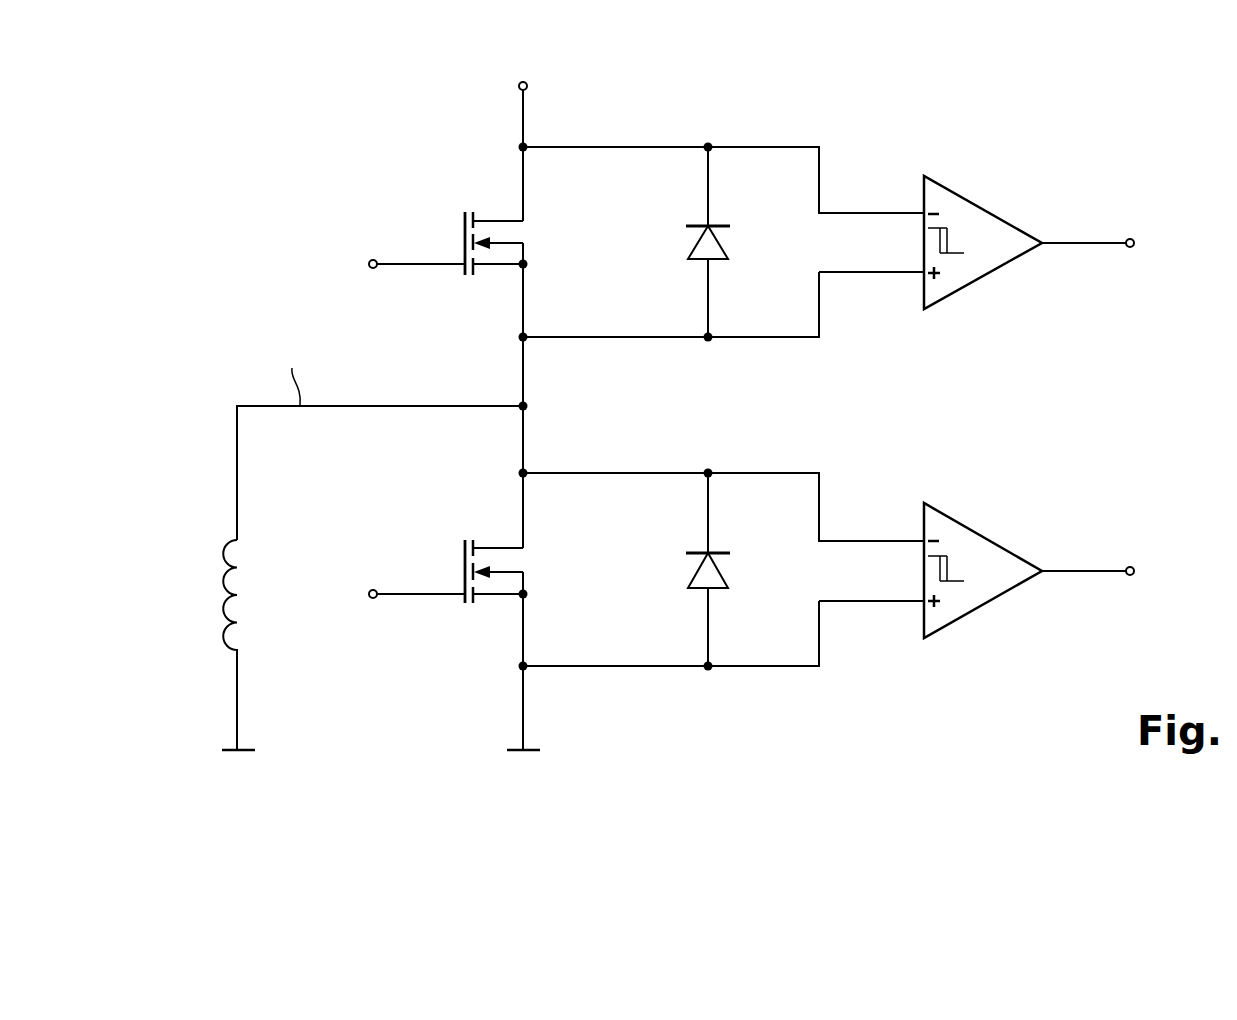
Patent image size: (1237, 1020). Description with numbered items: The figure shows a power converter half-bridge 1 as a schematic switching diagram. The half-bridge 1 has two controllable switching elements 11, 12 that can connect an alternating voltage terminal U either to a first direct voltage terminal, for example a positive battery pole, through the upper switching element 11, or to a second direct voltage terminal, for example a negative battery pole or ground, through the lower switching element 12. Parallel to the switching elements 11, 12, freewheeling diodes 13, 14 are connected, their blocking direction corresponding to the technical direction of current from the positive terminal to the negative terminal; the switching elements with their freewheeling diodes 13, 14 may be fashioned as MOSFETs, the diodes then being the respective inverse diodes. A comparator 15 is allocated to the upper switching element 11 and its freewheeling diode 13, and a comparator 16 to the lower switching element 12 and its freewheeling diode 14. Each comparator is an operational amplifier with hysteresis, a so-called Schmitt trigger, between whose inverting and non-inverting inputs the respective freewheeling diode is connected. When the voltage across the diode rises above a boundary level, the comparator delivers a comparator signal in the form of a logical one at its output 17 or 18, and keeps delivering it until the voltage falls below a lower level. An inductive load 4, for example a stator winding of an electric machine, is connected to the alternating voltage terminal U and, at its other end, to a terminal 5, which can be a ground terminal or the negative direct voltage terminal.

The power converter half-bridge 1 is at (1142, 153).
The inductive load 4 is at (222, 582).
The terminal 5 is at (238, 705).
The controllable switching element 11 is at (465, 243).
The controllable switching element 12 is at (465, 572).
The freewheeling diode 13 is at (724, 243).
The freewheeling diode 14 is at (724, 571).
The comparator 15 is at (986, 280).
The comparator 16 is at (986, 609).
The output 17 is at (1134, 244).
The output 18 is at (1134, 572).